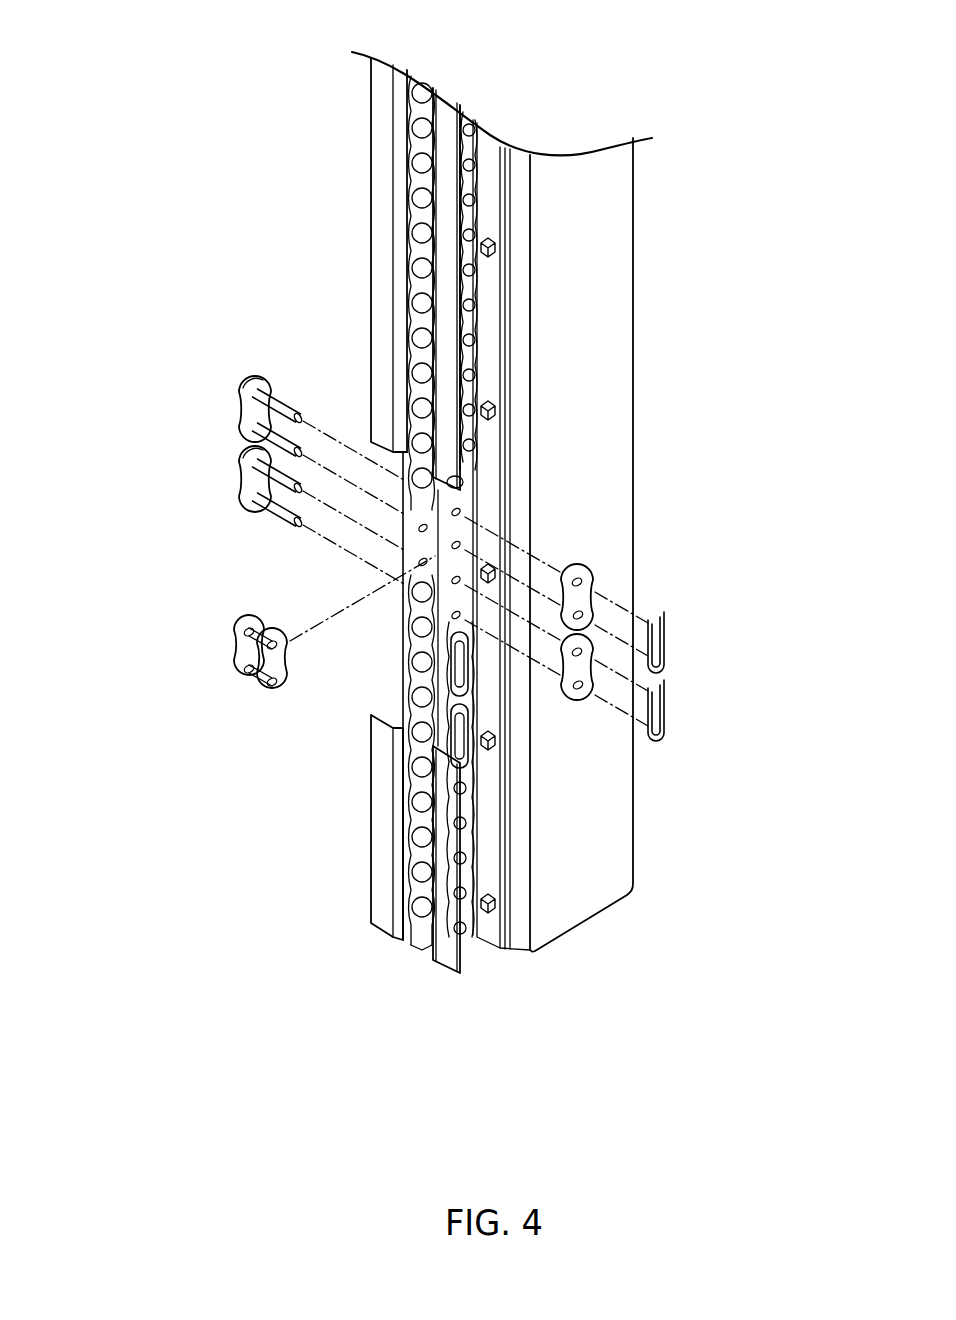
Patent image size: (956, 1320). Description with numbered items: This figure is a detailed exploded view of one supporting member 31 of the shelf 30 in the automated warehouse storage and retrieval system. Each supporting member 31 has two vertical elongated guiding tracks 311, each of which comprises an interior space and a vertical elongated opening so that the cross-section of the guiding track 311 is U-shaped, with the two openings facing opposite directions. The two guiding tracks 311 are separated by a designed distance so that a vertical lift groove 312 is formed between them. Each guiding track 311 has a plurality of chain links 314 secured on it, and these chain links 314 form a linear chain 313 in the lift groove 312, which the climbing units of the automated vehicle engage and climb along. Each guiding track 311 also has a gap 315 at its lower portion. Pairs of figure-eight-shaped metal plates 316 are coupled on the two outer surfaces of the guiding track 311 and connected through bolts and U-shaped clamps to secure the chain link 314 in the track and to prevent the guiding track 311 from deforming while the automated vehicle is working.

The shelf 30 is at (636, 867).
The supporting member 31 is at (370, 927).
The guiding track 311 is at (485, 145).
The lift groove 312 is at (408, 172).
The linear chain 313 is at (422, 75).
The chain link 314 is at (229, 650).
The gap 315 is at (452, 480).
The figure-eight-shaped metal plate 316 is at (238, 422).